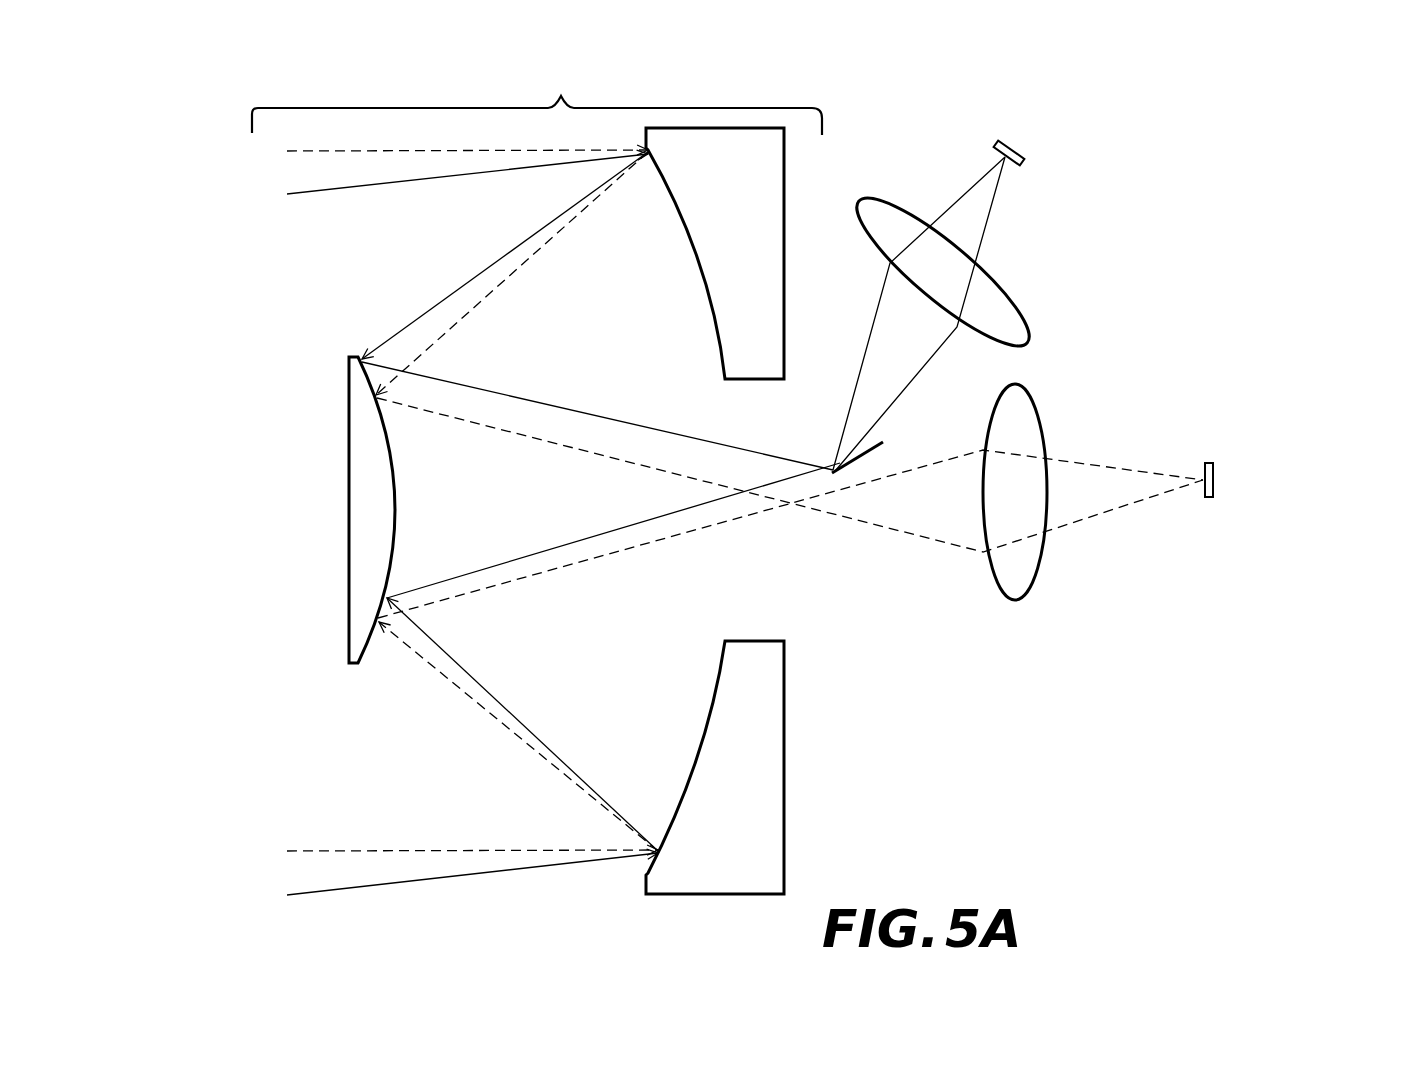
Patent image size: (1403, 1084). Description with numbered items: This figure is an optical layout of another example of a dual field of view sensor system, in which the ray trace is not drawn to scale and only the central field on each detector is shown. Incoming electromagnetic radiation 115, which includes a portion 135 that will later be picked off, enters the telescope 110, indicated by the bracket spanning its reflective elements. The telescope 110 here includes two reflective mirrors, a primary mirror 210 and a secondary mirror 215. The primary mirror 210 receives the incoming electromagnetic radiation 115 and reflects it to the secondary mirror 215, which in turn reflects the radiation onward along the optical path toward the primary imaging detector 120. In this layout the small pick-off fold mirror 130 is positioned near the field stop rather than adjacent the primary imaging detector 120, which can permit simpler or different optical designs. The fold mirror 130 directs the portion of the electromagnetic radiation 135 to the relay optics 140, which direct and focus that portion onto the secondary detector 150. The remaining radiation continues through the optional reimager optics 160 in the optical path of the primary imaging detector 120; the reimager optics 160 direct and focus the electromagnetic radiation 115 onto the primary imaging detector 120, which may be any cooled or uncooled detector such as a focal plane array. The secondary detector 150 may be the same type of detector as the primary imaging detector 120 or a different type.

The telescope 110 is at (561, 97).
The incoming electromagnetic radiation 115 is at (313, 151).
The portion of the electromagnetic radiation 135 is at (345, 188).
The primary mirror 210 is at (708, 289).
The secondary mirror 215 is at (349, 514).
The fold mirror 130 is at (850, 463).
The relay optics 140 is at (1018, 302).
The secondary detector 150 is at (1025, 163).
The reimager optics 160 is at (1022, 385).
The primary imaging detector 120 is at (1213, 482).